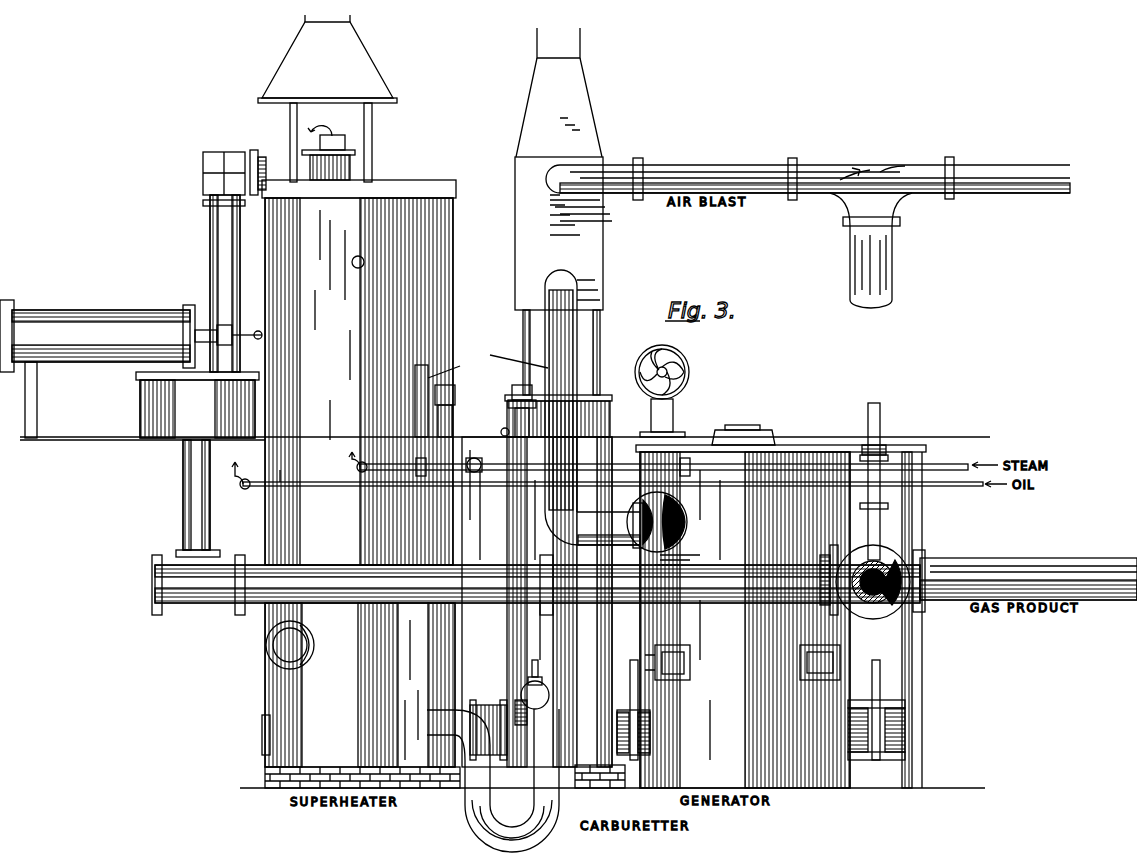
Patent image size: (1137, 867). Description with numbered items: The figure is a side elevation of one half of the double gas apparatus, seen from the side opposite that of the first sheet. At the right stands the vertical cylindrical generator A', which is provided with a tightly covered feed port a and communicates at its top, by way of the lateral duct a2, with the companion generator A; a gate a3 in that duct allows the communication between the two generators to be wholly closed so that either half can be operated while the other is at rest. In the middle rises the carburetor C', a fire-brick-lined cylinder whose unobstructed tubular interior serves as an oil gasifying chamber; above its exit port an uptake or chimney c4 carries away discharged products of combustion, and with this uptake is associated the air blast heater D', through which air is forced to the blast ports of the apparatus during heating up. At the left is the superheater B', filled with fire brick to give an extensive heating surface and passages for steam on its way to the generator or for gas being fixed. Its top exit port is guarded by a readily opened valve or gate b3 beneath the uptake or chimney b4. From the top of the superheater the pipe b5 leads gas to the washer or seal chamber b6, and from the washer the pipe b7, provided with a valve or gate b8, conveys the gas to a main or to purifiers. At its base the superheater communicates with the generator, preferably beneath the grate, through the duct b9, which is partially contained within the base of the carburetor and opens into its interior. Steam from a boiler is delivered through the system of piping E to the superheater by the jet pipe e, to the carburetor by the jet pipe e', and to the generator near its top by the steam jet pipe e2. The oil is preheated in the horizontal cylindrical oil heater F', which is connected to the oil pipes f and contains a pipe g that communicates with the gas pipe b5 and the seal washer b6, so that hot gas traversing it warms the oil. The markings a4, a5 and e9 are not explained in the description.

The generator A is at (920, 620).
The generator A' is at (781, 616).
The feed port a is at (701, 487).
The lateral duct a2 is at (865, 568).
The gate a3 is at (540, 298).
The valve a4 is at (876, 723).
The door a5 is at (658, 658).
The superheater B' is at (361, 695).
The valve or gate b3 is at (330, 145).
The uptake or chimney b4 is at (327, 98).
The pipe b5 is at (226, 251).
The washer or seal chamber b6 is at (197, 405).
The pipe b7 is at (188, 498).
The valve or gate b8 is at (150, 582).
The duct b9 is at (493, 710).
The carburetor C' is at (537, 581).
The uptake or chimney c4 is at (559, 92).
The air blast heater D' is at (559, 276).
The system of piping E is at (357, 325).
The jet pipe e is at (345, 266).
The jet pipe e' is at (516, 396).
The steam jet pipe e2 is at (692, 464).
The valve e9 is at (633, 723).
The oil heater F' is at (132, 370).
The oil pipe f is at (607, 472).
The pipe g is at (228, 325).